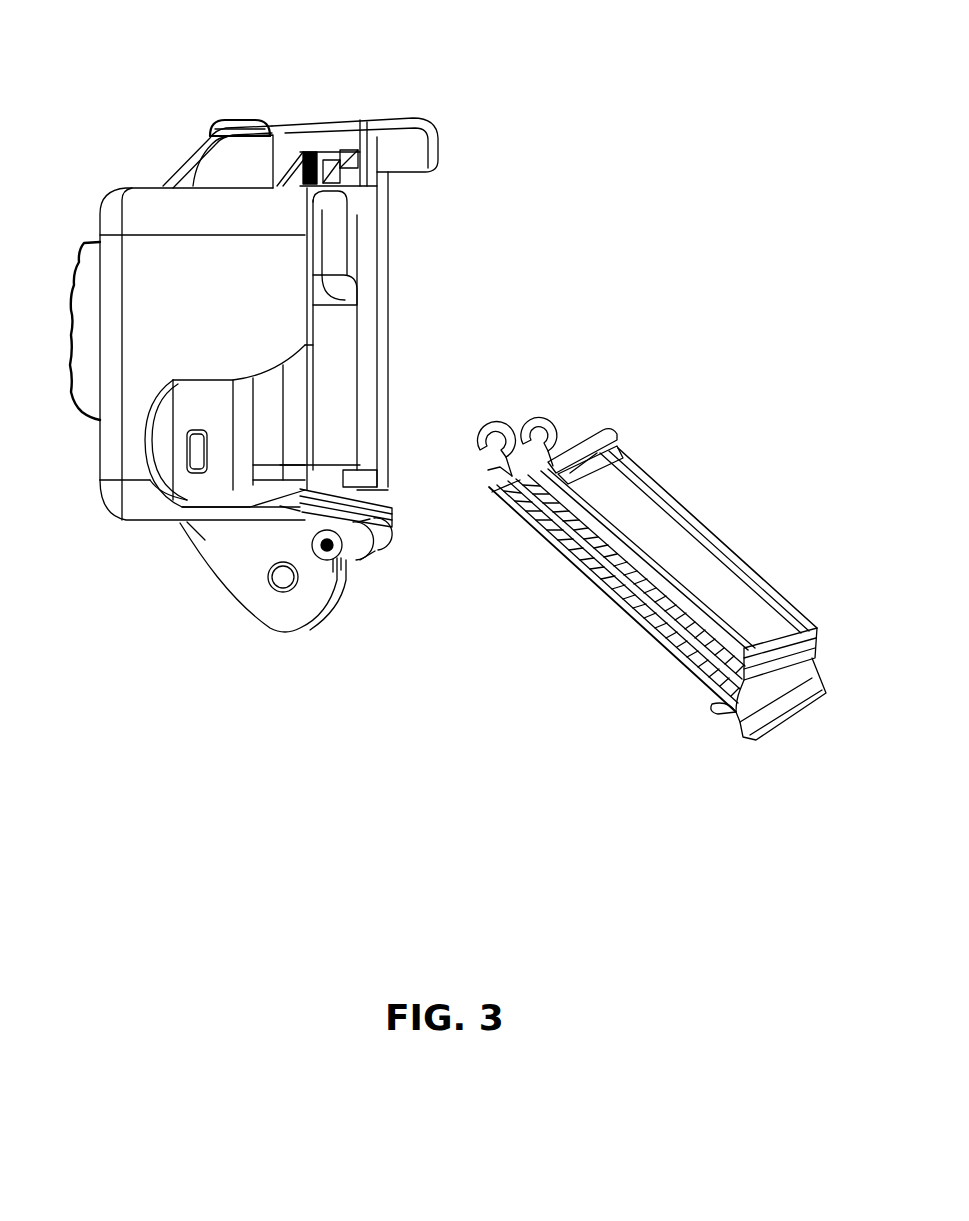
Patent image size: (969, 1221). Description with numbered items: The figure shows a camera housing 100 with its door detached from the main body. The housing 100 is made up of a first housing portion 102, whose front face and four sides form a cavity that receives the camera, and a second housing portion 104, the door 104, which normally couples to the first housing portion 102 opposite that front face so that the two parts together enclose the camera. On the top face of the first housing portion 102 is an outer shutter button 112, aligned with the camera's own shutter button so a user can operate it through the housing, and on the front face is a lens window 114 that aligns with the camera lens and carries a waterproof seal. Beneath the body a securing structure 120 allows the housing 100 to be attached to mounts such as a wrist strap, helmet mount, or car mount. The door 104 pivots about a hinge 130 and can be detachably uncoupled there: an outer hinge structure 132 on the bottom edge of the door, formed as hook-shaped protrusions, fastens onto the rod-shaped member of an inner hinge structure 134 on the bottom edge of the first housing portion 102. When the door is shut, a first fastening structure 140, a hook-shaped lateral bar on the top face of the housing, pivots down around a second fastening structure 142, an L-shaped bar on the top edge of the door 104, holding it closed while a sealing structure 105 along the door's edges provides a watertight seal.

The camera housing 100 is at (678, 60).
The first housing portion 102 is at (143, 263).
The second housing portion (door) 104 is at (588, 585).
The sealing structure 105 is at (680, 643).
The outer shutter button 112 is at (246, 110).
The lens window 114 is at (84, 390).
The securing structure 120 is at (258, 610).
The hinge 130 is at (393, 515).
The outer hinge structure 132 is at (548, 410).
The inner hinge structure 134 is at (366, 543).
The first fastening structure 140 is at (376, 116).
The second fastening structure 142 is at (782, 700).